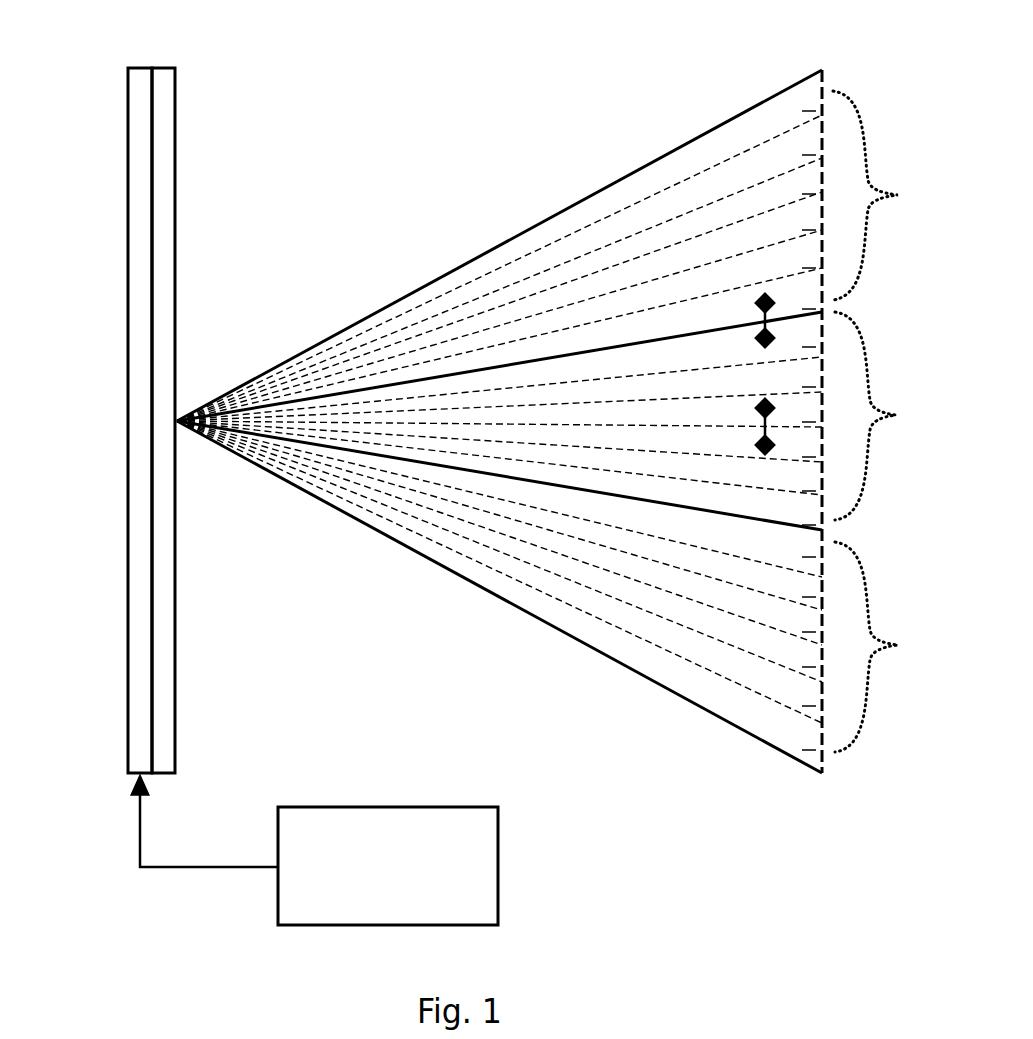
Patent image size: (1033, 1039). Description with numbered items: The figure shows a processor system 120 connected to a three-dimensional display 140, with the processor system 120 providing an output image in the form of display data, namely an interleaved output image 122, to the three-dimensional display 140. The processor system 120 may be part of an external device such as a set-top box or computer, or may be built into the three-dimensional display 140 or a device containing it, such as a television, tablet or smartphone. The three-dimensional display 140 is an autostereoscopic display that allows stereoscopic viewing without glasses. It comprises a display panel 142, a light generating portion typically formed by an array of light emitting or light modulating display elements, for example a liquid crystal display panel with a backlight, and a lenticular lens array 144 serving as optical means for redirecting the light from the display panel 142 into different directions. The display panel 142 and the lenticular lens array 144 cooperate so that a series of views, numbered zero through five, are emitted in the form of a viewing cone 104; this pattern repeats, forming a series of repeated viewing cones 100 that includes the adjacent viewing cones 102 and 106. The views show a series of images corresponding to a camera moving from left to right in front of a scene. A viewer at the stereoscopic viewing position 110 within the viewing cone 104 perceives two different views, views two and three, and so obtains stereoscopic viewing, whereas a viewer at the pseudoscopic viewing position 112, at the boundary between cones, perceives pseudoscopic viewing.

The series of repeated viewing cones 100 is at (366, 535).
The viewing cone 102 is at (874, 643).
The viewing cone 104 is at (874, 419).
The viewing cone 106 is at (874, 199).
The stereoscopic viewing position 110 is at (757, 421).
The pseudoscopic viewing position 112 is at (757, 318).
The processor system 120 is at (367, 883).
The interleaved output image 122 is at (178, 868).
The 3D display 140 is at (147, 398).
The display panel 142 is at (142, 682).
The lenticular lens array 144 is at (163, 727).